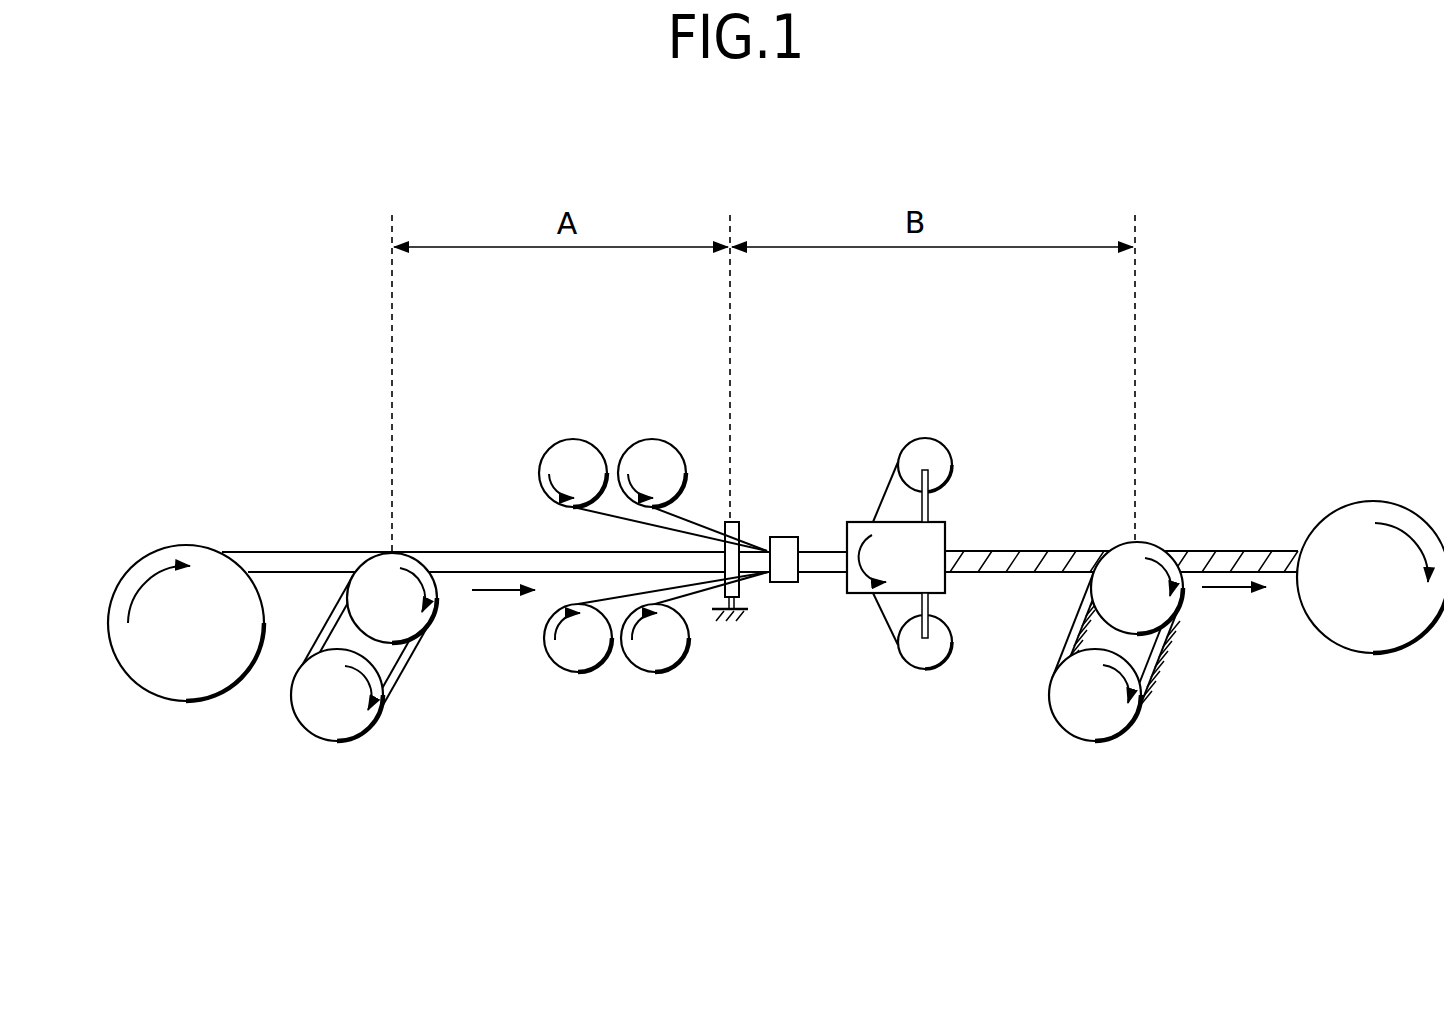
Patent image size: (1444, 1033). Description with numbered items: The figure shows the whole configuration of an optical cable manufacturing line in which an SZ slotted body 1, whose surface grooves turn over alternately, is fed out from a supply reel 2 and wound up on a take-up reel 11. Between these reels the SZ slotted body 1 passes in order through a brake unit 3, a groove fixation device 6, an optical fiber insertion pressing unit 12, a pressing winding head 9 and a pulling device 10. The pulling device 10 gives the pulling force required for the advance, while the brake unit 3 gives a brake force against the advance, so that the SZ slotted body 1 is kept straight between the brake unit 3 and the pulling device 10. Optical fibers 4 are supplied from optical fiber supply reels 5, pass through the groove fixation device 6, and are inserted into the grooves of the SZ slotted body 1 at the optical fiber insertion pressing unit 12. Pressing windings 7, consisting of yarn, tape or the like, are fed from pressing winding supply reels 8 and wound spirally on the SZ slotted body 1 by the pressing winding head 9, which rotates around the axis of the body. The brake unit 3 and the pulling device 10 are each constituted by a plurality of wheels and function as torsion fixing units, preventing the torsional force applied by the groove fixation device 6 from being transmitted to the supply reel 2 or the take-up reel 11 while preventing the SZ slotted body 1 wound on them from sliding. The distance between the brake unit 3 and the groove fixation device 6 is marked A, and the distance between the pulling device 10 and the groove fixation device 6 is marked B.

The SZ slotted body 1 is at (310, 550).
The supply reel 2 is at (200, 703).
The brake unit 3 is at (345, 743).
The optical fibers 4 is at (703, 527).
The optical fiber supply reels 5 is at (573, 438).
The groove fixation device 6 is at (733, 632).
The pressing windings 7 is at (885, 492).
The pressing winding supply reels 8 is at (928, 672).
The pressing winding head 9 is at (857, 598).
The pulling device 10 is at (1105, 742).
The take-up reel 11 is at (1385, 657).
The optical fiber insertion pressing unit 12 is at (784, 527).